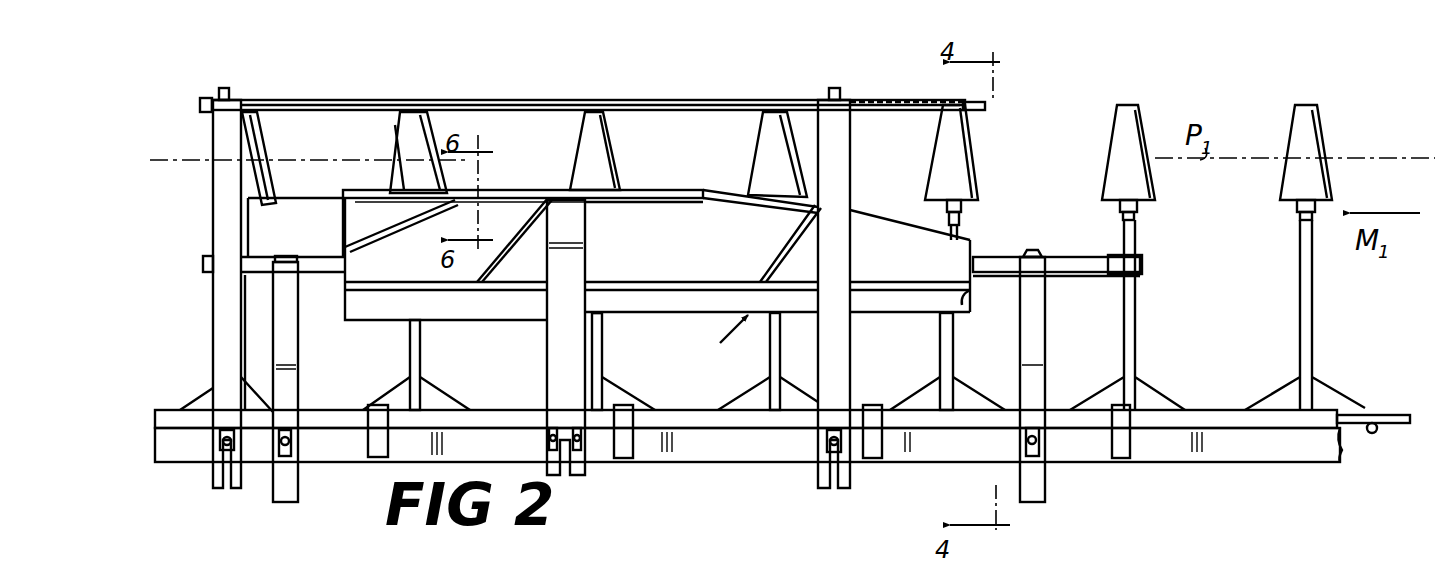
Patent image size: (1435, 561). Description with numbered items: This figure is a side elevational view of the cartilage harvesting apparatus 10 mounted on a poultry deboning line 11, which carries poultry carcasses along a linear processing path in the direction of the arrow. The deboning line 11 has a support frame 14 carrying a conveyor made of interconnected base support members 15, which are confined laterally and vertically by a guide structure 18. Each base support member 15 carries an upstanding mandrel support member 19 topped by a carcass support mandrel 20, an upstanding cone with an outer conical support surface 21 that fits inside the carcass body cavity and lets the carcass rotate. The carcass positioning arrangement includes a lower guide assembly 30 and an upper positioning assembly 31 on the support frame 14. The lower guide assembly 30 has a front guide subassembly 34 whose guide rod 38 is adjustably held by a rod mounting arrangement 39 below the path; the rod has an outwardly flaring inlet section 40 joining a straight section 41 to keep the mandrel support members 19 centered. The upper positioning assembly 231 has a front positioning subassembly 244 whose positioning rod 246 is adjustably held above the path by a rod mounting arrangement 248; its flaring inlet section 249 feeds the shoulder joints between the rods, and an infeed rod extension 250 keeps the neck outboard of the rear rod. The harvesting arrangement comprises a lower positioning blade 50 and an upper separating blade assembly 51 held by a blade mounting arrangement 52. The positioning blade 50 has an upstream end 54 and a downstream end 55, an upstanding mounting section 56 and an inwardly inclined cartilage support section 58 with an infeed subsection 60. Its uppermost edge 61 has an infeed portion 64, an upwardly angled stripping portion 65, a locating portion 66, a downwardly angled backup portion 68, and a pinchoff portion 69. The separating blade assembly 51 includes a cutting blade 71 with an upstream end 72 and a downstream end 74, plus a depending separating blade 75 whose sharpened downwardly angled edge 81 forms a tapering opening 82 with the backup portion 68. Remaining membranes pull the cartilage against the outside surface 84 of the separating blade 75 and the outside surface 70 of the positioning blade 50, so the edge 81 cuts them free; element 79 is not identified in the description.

The cartilage harvesting apparatus 10 is at (195, 255).
The poultry deboning line 11 is at (738, 477).
The support frame 14 is at (1175, 460).
The base support members 15 is at (1340, 430).
The guide structure 18 is at (1243, 385).
The mandrel support member 19 is at (410, 350).
The carcass support mandrel 20 is at (258, 125).
The outer conical support surface 21 is at (1122, 136).
The lower guide assembly 30 is at (1073, 255).
The upper positioning assembly 31 is at (322, 92).
The front guide subassembly 34 is at (1100, 272).
The guide rod 38 is at (1140, 262).
The rod mounting arrangement 39 is at (290, 492).
The inlet section 40 is at (1128, 272).
The straight section 41 is at (250, 262).
The lower positioning blade 50 is at (714, 343).
The upper separating blade assembly 51 is at (343, 193).
The blade mounting arrangement 52 is at (545, 357).
The upstream end 54 is at (960, 300).
The downstream end 55 is at (345, 305).
The mounting section 56 is at (648, 303).
The cartilage support section 58 is at (522, 268).
The infeed subsection 60 is at (978, 238).
The uppermost edge 61 is at (782, 205).
The infeed portion 64 is at (975, 225).
The stripping portion 65 is at (876, 215).
The locating portion 66 is at (735, 208).
The backup portion 68 is at (400, 242).
The pinchoff portion 69 is at (722, 280).
The outside surface 70 is at (658, 268).
The cutting blade 71 is at (529, 188).
The upstream end 72 is at (712, 195).
The downstream end 74 is at (343, 197).
The separating blade 75 is at (345, 220).
The brace 79 is at (545, 206).
The downwardly angled edge 81 is at (355, 242).
The downwardly angled opening 82 is at (396, 222).
The outside surface 84 is at (267, 227).
The upper positioning assembly 231 is at (428, 72).
The front positioning subassembly 244 is at (545, 90).
The positioning rod 246 is at (645, 84).
The rod mounting arrangement 248 is at (213, 132).
The inlet section 249 is at (912, 103).
The infeed rod extension 250 is at (928, 104).